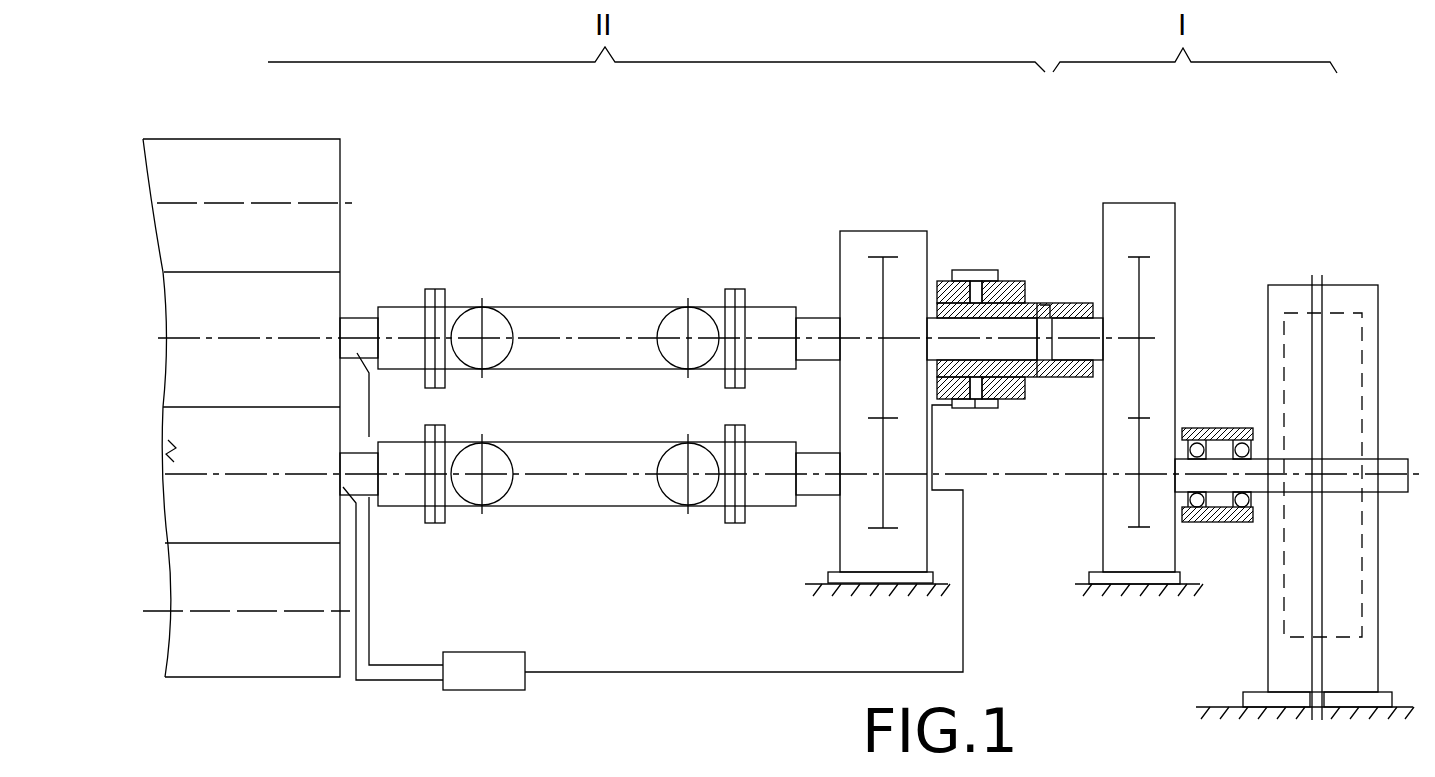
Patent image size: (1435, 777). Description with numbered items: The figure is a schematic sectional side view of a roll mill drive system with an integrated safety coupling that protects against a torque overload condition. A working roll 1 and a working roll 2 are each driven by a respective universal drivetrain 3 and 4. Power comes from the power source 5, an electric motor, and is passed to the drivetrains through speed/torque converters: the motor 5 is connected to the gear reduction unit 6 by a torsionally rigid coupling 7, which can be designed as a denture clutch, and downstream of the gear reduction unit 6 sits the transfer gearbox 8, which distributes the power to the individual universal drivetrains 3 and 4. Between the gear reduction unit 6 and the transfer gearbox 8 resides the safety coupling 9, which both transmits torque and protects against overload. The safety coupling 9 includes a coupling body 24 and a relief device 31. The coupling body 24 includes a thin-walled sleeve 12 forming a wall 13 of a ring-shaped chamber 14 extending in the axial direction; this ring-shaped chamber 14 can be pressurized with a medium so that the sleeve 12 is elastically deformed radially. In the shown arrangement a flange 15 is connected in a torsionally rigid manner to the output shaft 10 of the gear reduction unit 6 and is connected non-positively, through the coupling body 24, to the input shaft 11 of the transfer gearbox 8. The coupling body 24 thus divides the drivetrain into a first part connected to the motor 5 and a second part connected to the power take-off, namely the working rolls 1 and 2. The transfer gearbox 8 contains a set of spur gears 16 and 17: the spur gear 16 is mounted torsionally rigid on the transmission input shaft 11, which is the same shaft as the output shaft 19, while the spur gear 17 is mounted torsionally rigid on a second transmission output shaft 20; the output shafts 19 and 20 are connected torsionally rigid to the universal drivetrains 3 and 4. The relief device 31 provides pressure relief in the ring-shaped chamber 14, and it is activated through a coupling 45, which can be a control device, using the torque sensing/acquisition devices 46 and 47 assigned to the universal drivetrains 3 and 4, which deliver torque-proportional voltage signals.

The working roll 1 is at (250, 314).
The working roll 2 is at (252, 522).
The universal drivetrain 3 is at (577, 320).
The universal drivetrain 4 is at (582, 485).
The power source 5 is at (1298, 290).
The gear reduction unit 6 is at (1170, 203).
The torsionally rigid coupling 7 is at (1201, 424).
The transfer gearbox 8 is at (872, 231).
The safety coupling 9 is at (1024, 261).
The output shaft 10 is at (1090, 356).
The input shaft 11 is at (994, 356).
The thin-walled sleeve 12 is at (1003, 408).
The wall 13 is at (1007, 280).
The ring-shaped chamber 14 is at (1013, 408).
The flange 15 is at (1072, 303).
The spur gear 16 is at (882, 287).
The spur gear 17 is at (880, 500).
The output shaft 19 is at (810, 323).
The second transmission output shaft 20 is at (818, 450).
The coupling body 24 is at (1023, 386).
The relief device 31 is at (943, 414).
The coupling 45 is at (477, 646).
The torque sensing/acquisition device 46 is at (356, 627).
The torque sensing/acquisition device 47 is at (369, 587).